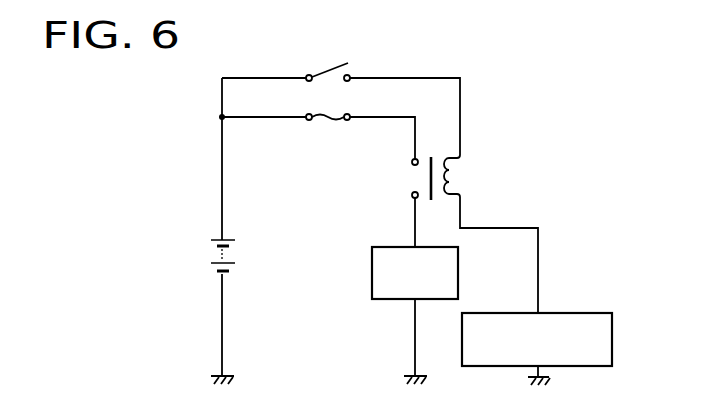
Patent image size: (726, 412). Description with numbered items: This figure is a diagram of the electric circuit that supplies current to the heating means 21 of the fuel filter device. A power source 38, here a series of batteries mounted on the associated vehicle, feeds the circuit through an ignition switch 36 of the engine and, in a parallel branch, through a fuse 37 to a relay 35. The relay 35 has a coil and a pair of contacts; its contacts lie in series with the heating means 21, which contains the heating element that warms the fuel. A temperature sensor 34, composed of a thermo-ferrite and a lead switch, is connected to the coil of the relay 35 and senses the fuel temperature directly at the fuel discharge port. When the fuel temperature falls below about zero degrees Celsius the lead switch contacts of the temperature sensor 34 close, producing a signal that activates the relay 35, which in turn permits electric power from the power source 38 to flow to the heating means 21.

The heating means 21 is at (372, 290).
The temperature sensor 34 is at (578, 317).
The relay 35 is at (437, 182).
The ignition switch 36 is at (329, 71).
The fuse 37 is at (328, 121).
The power source 38 is at (233, 256).